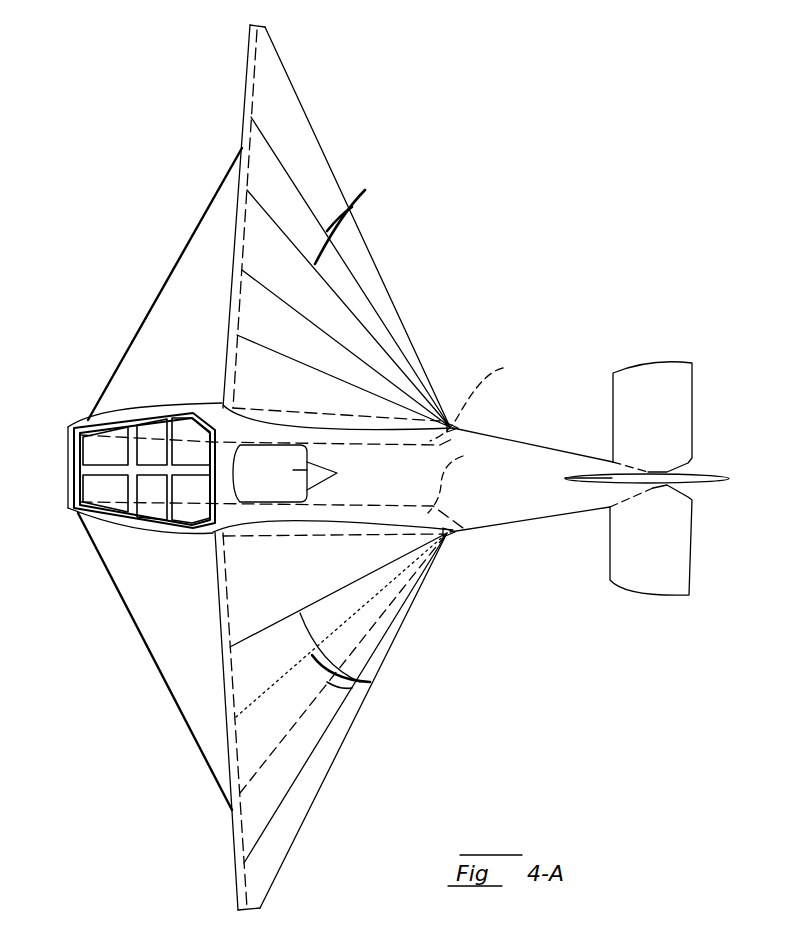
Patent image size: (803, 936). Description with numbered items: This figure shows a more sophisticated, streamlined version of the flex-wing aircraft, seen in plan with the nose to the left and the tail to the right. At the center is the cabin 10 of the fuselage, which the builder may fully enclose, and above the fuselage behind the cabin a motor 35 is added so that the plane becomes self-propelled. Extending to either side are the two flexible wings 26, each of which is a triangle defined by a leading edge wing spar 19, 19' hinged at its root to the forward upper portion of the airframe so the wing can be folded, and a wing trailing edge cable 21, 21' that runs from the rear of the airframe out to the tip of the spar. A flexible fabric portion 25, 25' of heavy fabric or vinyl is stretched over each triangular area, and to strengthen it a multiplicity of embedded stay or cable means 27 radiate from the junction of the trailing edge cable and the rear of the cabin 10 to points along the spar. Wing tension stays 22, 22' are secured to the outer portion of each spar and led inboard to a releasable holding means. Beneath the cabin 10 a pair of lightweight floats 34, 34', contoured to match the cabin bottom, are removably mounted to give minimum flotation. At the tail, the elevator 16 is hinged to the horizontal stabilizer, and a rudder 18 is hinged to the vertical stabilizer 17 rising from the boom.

The cabin 10 is at (153, 407).
The elevator 16 is at (680, 401).
The vertical stabilizer 17 is at (607, 479).
The rudder 18 is at (698, 478).
The leading edge wing spar 19 is at (266, 720).
The leading edge wing spar 19' is at (265, 225).
The wing trailing edge cable 21 is at (353, 720).
The wing trailing edge cable 21' is at (370, 227).
The wing tension stay 22 is at (144, 661).
The wing tension stay 22' is at (131, 284).
The flexible fabric portion 25 is at (331, 721).
The flexible fabric portion 25' is at (336, 226).
The wing 26 is at (268, 242).
The stay or cable means 27 is at (365, 190).
The float 34 is at (461, 478).
The float 34' is at (484, 397).
The motor 35 is at (307, 462).